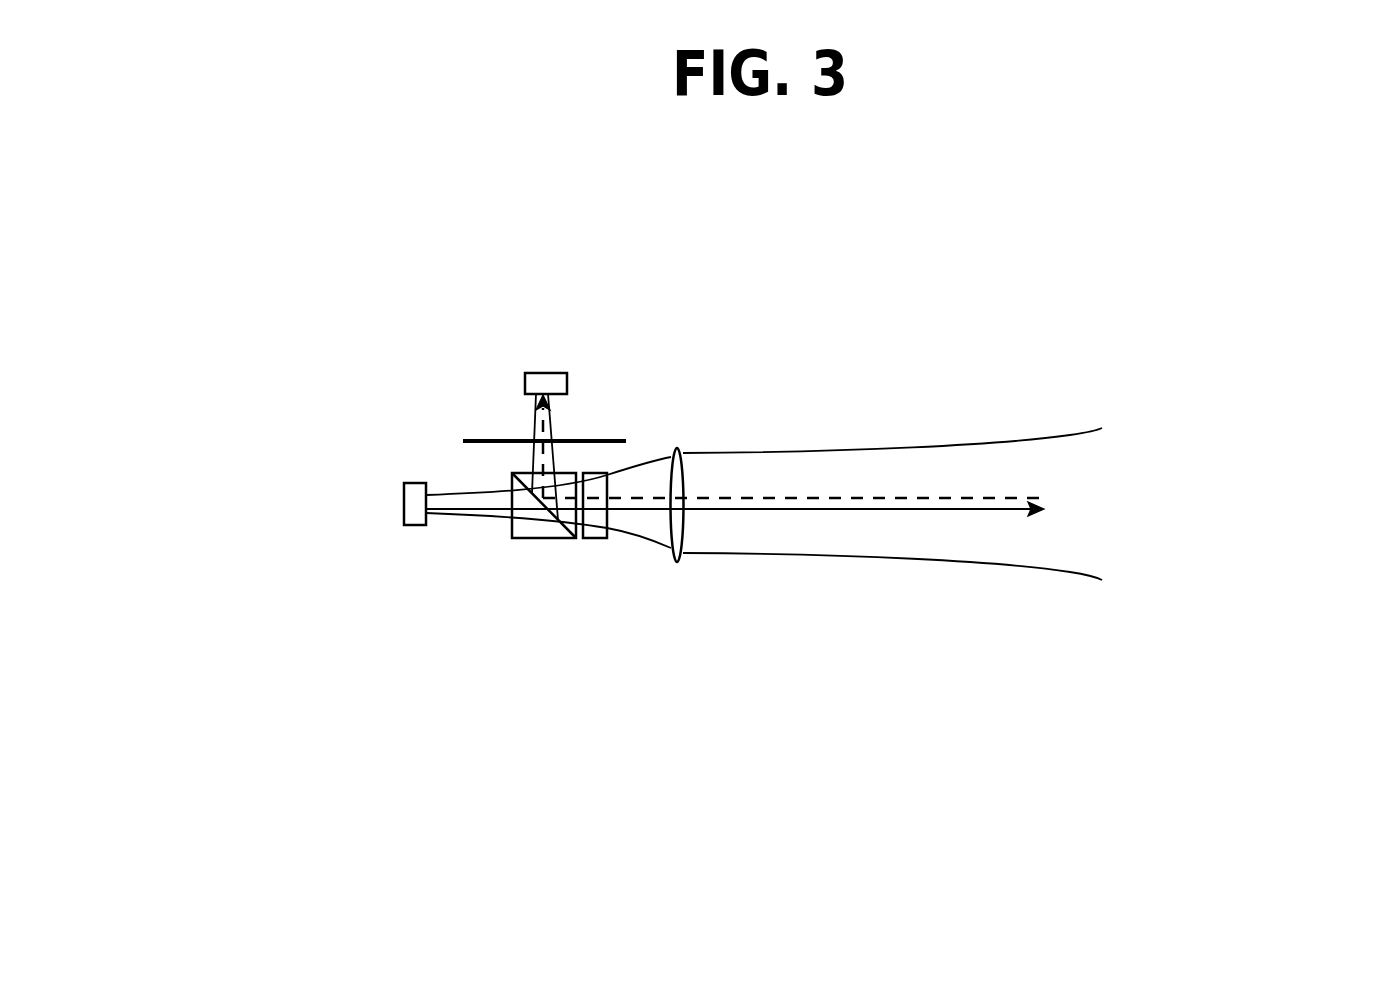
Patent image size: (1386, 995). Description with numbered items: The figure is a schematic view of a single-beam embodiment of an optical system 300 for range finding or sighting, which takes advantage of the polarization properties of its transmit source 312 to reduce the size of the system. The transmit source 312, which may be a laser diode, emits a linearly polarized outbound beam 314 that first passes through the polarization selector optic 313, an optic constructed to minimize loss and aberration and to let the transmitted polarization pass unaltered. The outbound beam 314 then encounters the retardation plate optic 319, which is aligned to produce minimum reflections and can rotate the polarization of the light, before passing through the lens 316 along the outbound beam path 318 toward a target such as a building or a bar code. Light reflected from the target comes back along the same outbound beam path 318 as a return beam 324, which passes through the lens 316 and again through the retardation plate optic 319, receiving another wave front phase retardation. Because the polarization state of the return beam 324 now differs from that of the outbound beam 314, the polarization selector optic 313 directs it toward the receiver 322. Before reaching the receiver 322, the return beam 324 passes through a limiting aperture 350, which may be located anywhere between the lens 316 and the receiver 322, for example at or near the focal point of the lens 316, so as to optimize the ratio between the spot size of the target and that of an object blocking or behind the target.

The optical system 300 is at (183, 909).
The transmit source 312 is at (416, 495).
The polarization selector optic 313 is at (540, 540).
The outbound beam 314 is at (735, 502).
The lens 316 is at (677, 450).
The outbound beam path 318 is at (1166, 637).
The retardation plate optic 319 is at (597, 540).
The receiver 322 is at (552, 382).
The return beam 324 is at (789, 446).
The limiting aperture 350 is at (500, 441).